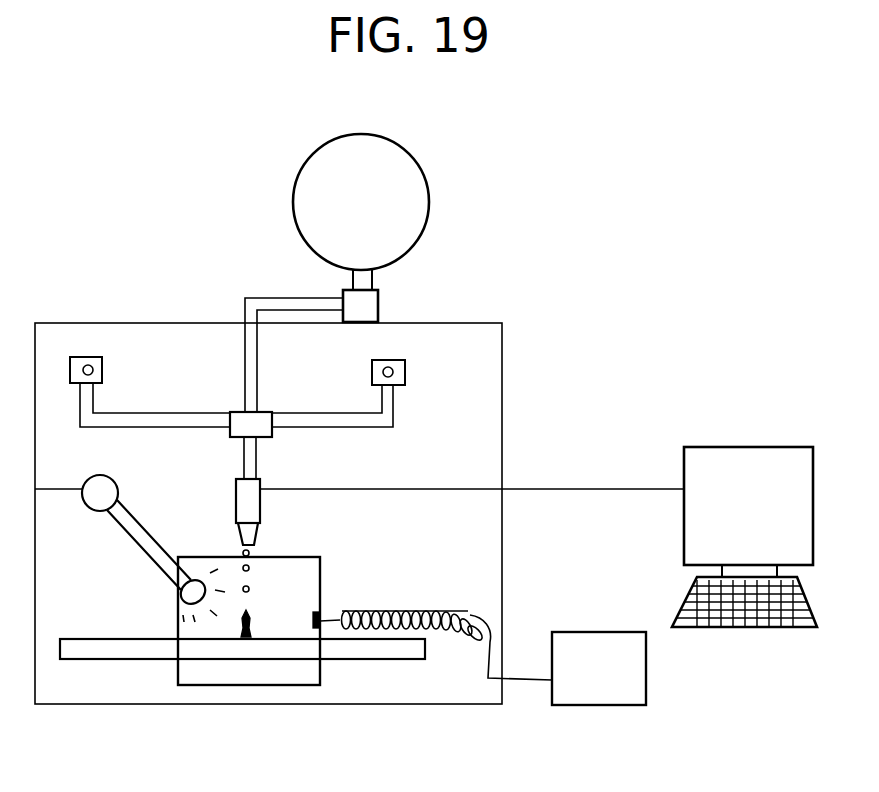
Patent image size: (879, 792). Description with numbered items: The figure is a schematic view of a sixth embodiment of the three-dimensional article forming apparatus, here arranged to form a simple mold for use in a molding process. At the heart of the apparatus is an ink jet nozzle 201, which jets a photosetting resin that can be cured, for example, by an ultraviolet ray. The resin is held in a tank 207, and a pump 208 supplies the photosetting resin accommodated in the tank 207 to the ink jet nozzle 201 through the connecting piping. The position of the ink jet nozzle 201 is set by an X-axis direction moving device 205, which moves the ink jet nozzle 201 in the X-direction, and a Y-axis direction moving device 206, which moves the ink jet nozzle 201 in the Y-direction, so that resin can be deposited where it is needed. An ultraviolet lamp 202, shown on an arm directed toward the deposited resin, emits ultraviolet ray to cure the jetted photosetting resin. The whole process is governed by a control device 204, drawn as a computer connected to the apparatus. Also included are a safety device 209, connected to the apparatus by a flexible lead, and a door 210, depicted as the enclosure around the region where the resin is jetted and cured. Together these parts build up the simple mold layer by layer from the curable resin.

The ink jet nozzle 201 is at (243, 502).
The ultraviolet lamp 202 is at (158, 567).
The control device 204 is at (753, 612).
The X-axis direction moving device 205 is at (260, 428).
The Y-axis direction moving device 206 is at (405, 372).
The tank 207 is at (415, 212).
The pump 208 is at (372, 305).
The safety device 209 is at (598, 697).
The door 210 is at (268, 674).